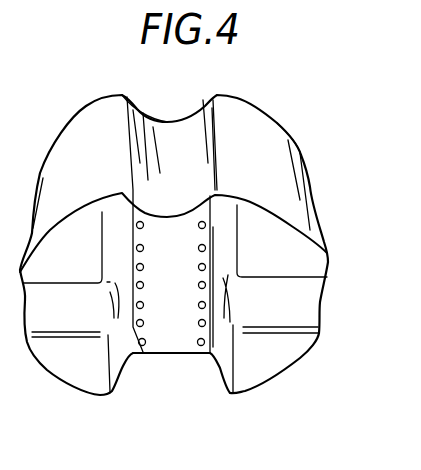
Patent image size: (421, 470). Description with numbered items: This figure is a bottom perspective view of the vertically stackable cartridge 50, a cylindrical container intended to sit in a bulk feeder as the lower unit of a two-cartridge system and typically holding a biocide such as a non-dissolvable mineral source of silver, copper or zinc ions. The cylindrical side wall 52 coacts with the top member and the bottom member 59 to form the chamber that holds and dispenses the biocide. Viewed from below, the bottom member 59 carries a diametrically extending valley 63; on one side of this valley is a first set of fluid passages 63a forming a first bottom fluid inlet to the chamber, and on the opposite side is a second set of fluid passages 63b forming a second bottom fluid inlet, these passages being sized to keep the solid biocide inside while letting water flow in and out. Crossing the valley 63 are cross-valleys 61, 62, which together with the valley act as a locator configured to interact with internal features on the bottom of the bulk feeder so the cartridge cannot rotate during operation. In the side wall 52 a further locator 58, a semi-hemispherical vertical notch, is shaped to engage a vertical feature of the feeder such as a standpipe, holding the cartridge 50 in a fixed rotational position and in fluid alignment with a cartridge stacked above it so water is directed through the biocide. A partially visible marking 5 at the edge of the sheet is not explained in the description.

The (clipped numeral) 5 is at (10, 37).
The stackable cartridge 50 is at (92, 94).
The locator 58 is at (138, 108).
The cylindrical side wall 52 is at (318, 217).
The bottom member 59 is at (307, 267).
The cross-valley 61 is at (305, 317).
The cross-valley 62 is at (63, 323).
The valley 63 is at (178, 353).
The first set of fluid passages 63a is at (201, 345).
The second set of fluid passages 63b is at (143, 345).